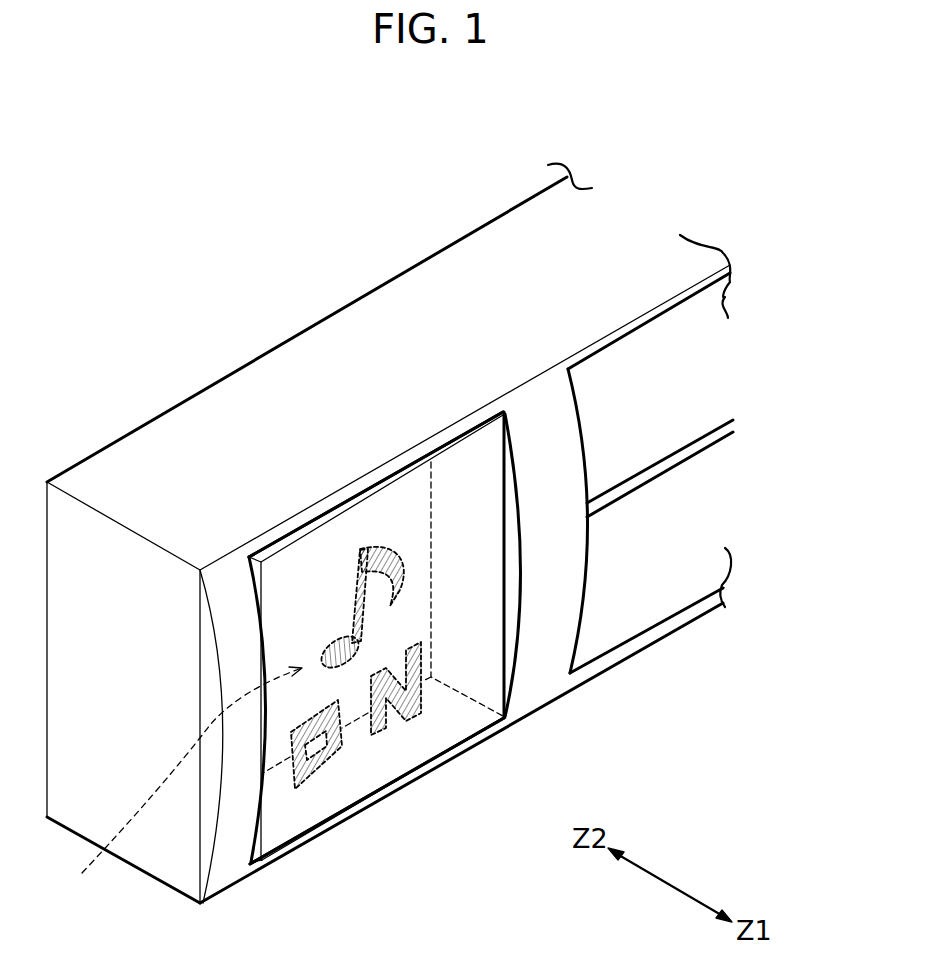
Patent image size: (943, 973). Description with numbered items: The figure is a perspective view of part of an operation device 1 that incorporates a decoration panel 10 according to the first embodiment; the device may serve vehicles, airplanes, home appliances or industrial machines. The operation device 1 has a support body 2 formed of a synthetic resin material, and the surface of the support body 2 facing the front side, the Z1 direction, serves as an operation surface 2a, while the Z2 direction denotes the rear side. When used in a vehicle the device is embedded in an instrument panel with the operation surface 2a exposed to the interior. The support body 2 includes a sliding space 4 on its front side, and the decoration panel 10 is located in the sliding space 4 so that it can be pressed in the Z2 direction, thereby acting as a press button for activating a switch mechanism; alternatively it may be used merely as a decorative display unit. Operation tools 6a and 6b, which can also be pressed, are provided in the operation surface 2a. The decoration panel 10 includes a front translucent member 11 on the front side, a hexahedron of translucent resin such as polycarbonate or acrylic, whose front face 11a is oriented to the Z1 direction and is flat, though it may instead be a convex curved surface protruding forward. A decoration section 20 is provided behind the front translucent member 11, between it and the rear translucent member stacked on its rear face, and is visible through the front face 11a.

The operation device 1 is at (460, 212).
The support body 2 is at (327, 363).
The operation surface 2a is at (540, 672).
The sliding space 4 is at (517, 480).
The operation tool 6a is at (692, 372).
The operation tool 6b is at (705, 527).
The decoration panel 10 is at (350, 815).
The front translucent member 11 is at (460, 748).
The front face 11a is at (309, 565).
The decoration section 20 is at (179, 785).